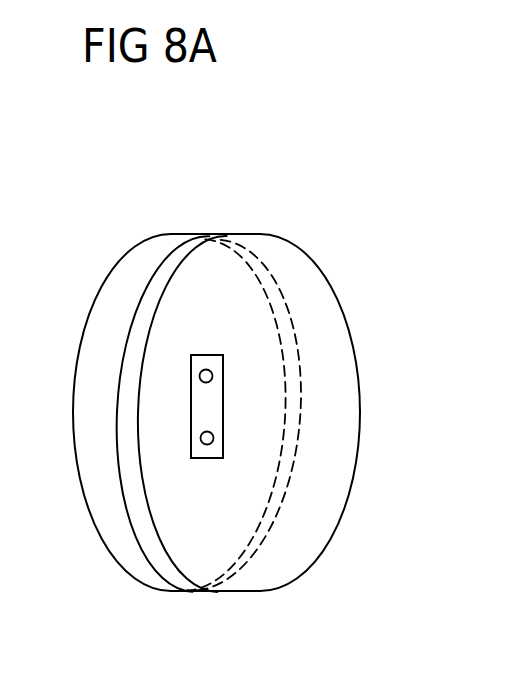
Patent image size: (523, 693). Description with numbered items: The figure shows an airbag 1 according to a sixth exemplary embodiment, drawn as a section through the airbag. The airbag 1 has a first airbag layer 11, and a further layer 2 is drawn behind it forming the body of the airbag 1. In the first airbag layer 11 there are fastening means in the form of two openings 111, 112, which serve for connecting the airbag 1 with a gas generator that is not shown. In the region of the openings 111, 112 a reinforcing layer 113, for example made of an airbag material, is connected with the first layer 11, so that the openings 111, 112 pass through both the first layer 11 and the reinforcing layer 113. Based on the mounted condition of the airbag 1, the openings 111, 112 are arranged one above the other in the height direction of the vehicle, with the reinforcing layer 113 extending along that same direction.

The airbag 1 is at (104, 216).
The drum body 2 is at (195, 589).
The first airbag layer 11 is at (127, 547).
The opening 111 is at (207, 444).
The opening 112 is at (205, 371).
The reinforcing layer 113 is at (207, 412).